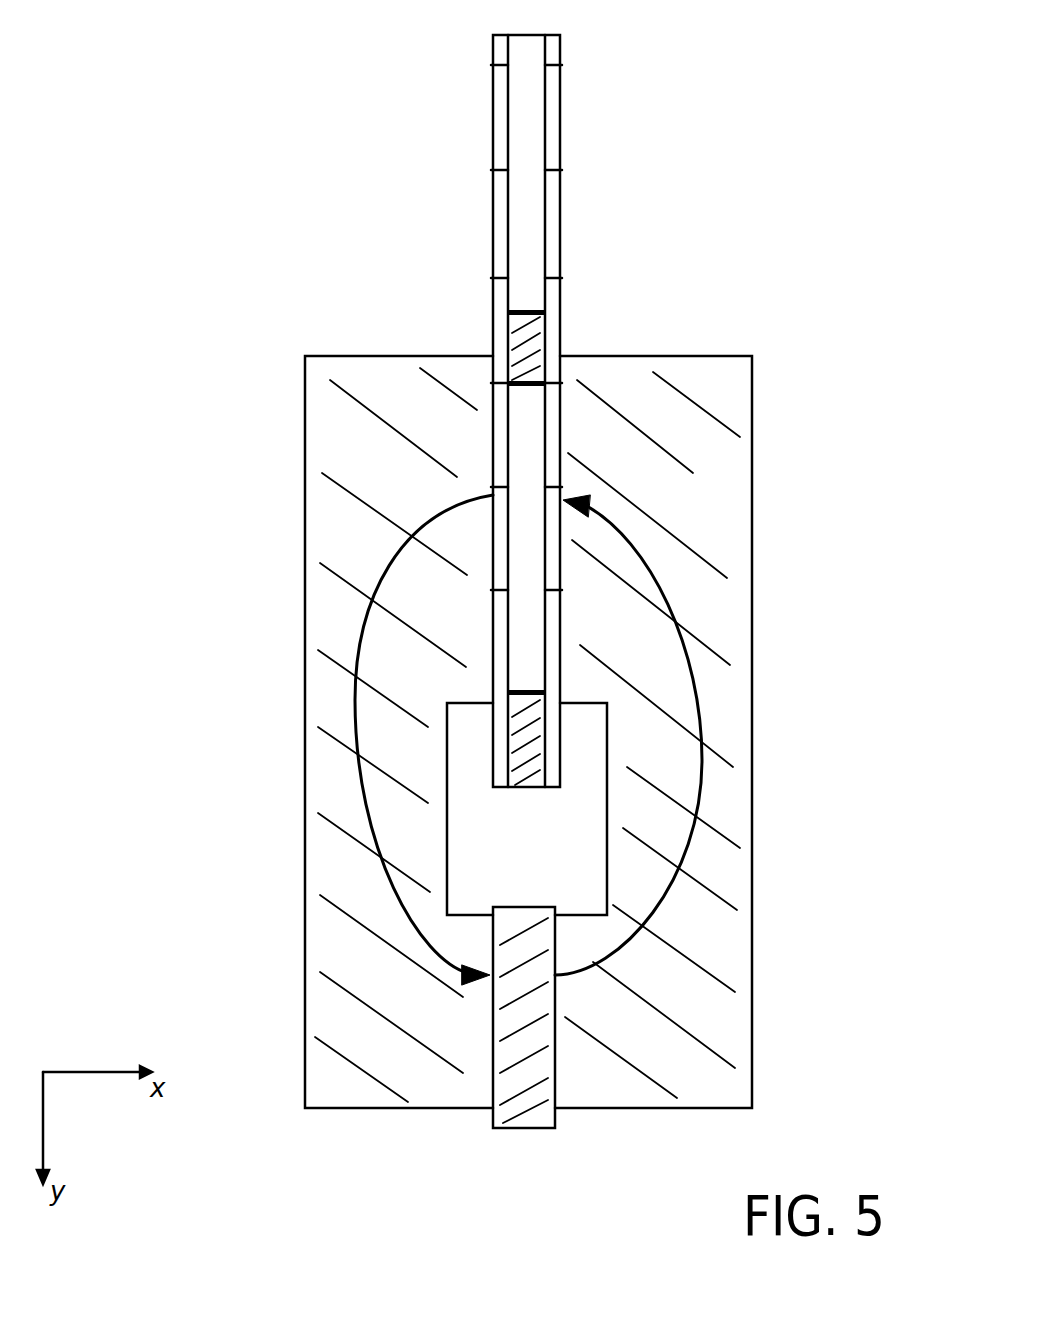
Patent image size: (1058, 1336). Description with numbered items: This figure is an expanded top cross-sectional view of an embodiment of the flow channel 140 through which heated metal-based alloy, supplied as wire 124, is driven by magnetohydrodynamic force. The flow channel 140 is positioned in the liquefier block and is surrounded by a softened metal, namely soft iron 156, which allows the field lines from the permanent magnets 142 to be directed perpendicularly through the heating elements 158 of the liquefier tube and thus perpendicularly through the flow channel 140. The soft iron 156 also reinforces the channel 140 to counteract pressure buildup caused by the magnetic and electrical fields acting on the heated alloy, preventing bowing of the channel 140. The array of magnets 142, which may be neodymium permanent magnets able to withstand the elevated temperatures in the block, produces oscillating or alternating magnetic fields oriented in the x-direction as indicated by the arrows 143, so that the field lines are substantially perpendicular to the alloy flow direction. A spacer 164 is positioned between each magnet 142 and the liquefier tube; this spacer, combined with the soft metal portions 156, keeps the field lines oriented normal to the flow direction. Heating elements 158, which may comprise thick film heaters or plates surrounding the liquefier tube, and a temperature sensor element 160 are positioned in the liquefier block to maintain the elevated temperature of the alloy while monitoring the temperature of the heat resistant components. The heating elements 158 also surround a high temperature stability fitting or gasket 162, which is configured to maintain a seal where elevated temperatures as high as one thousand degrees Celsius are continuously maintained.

The wire 124 is at (543, 300).
The flow channel 140 is at (520, 450).
The array of magnets 142 is at (510, 1055).
The arrows 143 is at (697, 658).
The soft iron 156 is at (690, 480).
The heating elements 158 is at (553, 217).
The temperature sensor element 160 is at (493, 487).
The gasket 162 is at (510, 330).
The spacer 164 is at (655, 768).